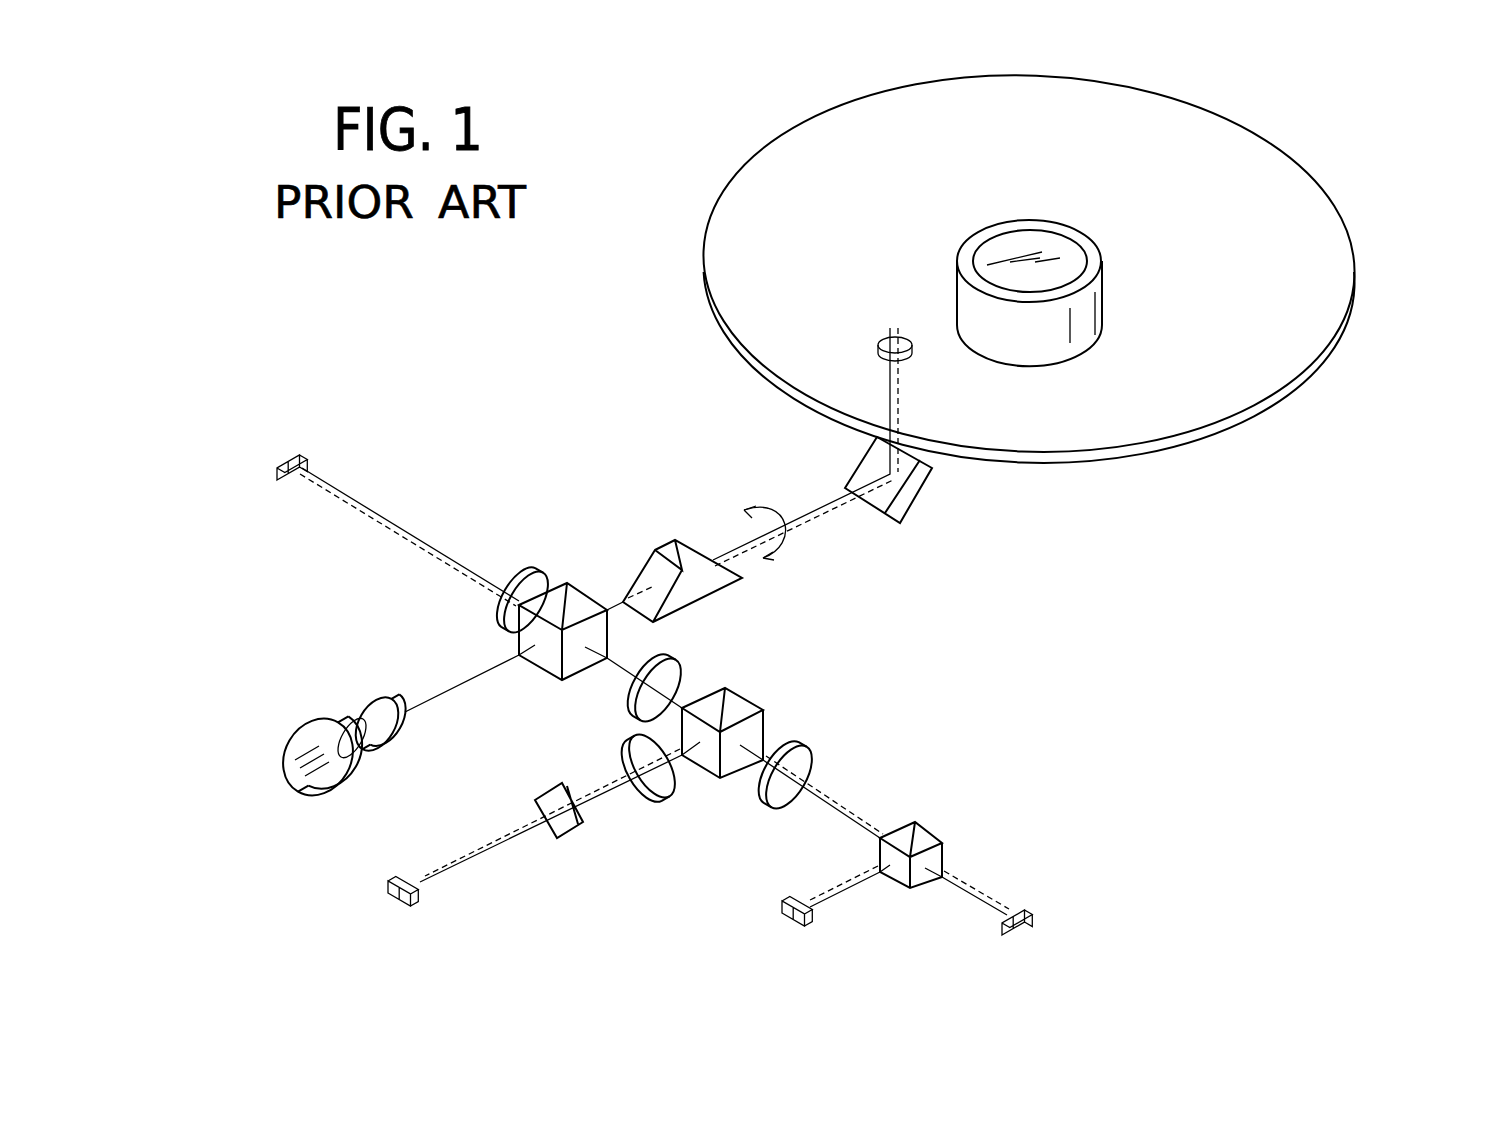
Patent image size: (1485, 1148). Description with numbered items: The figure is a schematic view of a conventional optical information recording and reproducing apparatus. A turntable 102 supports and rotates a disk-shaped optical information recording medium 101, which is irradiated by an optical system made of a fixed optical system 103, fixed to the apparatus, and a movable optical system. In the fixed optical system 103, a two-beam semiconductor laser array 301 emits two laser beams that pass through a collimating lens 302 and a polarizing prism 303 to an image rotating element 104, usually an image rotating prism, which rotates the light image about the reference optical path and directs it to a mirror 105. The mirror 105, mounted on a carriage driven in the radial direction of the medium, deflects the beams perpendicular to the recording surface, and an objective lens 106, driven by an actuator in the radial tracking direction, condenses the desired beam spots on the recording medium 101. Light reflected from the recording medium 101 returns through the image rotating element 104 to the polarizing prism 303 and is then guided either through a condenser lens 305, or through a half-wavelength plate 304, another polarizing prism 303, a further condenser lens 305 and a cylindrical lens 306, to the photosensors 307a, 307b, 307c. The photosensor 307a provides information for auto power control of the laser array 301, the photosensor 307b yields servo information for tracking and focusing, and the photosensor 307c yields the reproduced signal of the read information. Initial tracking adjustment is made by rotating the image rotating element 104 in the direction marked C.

The disk-shaped optical information recording medium 101 is at (1323, 240).
The turntable 102 is at (1095, 256).
The fixed optical system 103 is at (405, 370).
The image rotating element 104 is at (673, 545).
The mirror 105 is at (900, 480).
The objective lens 106 is at (878, 341).
The two-beam semiconductor laser array 301 is at (300, 735).
The collimating lens 302 is at (405, 727).
The polarizing prism 303 is at (568, 583).
The ½-wavelength plate 304 is at (676, 672).
The condenser lens 305 is at (520, 575).
The cylindrical lens 306 is at (560, 838).
The photosensor 307a is at (282, 452).
The photosensor 307b is at (386, 886).
The photosensor 307c is at (782, 904).